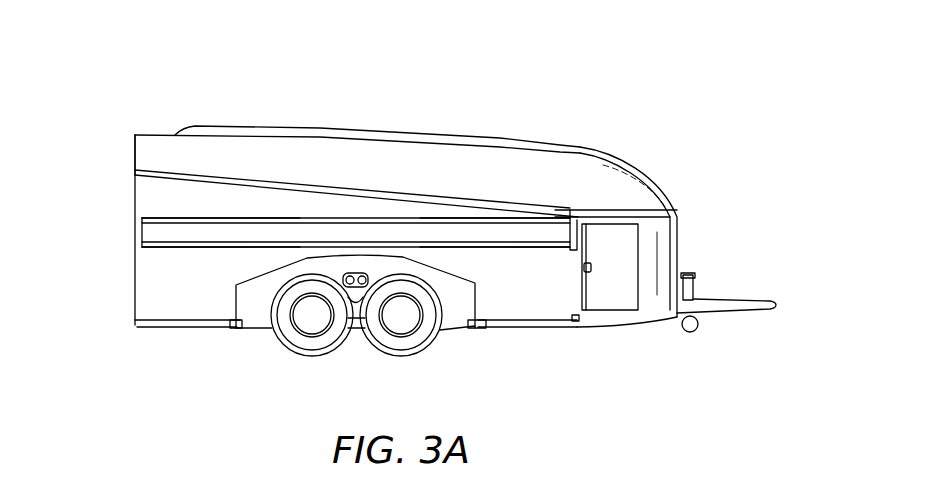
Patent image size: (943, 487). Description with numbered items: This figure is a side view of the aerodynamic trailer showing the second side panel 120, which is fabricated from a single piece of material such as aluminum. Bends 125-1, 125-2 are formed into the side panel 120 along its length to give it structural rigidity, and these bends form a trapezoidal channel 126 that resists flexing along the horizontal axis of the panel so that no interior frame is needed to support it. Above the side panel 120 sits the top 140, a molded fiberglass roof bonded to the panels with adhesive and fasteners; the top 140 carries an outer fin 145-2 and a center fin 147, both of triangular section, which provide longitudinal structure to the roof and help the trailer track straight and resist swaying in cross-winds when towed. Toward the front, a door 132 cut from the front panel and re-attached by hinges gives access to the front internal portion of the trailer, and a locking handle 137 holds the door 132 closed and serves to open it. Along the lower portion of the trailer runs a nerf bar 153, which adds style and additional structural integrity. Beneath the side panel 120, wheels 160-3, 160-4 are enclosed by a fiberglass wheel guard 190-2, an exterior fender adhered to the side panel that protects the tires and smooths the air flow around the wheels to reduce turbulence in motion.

The second side panel 120 is at (155, 272).
The bend 125-1 is at (187, 220).
The bend 125-2 is at (563, 238).
The trapezoidal channel 126 is at (372, 230).
The door 132 is at (625, 252).
The locking handle 137 is at (595, 270).
The top 140 is at (587, 167).
The outer fin 145-2 is at (143, 153).
The center fin 147 is at (240, 128).
The nerf bar 153 is at (183, 322).
The wheel 160-3 is at (292, 342).
The wheel 160-4 is at (422, 345).
The wheel guard 190-2 is at (247, 288).